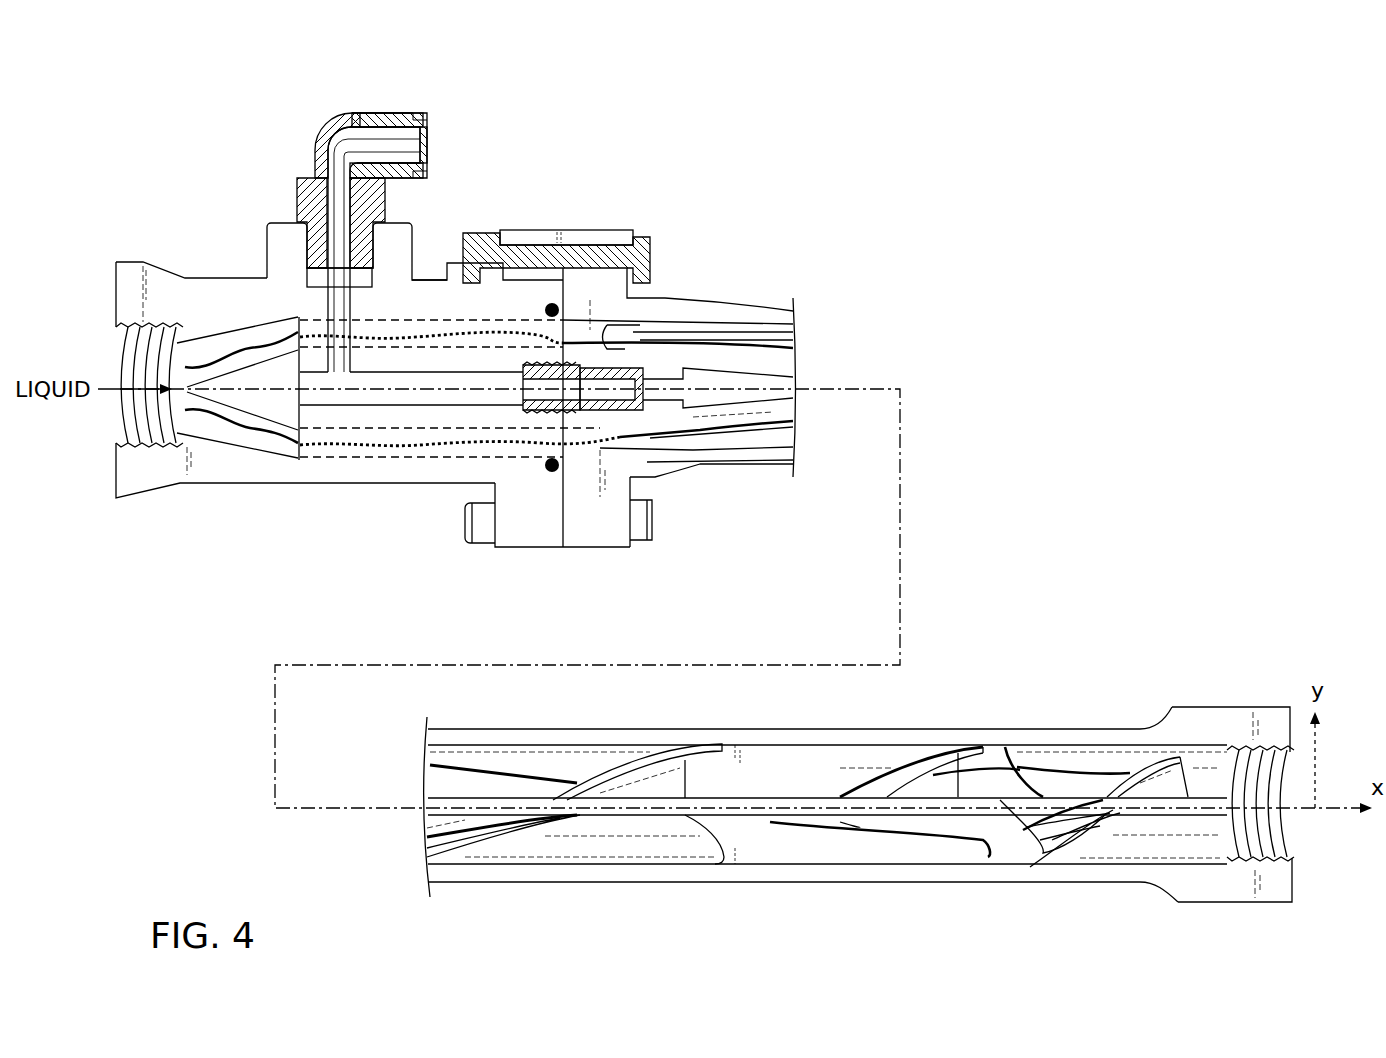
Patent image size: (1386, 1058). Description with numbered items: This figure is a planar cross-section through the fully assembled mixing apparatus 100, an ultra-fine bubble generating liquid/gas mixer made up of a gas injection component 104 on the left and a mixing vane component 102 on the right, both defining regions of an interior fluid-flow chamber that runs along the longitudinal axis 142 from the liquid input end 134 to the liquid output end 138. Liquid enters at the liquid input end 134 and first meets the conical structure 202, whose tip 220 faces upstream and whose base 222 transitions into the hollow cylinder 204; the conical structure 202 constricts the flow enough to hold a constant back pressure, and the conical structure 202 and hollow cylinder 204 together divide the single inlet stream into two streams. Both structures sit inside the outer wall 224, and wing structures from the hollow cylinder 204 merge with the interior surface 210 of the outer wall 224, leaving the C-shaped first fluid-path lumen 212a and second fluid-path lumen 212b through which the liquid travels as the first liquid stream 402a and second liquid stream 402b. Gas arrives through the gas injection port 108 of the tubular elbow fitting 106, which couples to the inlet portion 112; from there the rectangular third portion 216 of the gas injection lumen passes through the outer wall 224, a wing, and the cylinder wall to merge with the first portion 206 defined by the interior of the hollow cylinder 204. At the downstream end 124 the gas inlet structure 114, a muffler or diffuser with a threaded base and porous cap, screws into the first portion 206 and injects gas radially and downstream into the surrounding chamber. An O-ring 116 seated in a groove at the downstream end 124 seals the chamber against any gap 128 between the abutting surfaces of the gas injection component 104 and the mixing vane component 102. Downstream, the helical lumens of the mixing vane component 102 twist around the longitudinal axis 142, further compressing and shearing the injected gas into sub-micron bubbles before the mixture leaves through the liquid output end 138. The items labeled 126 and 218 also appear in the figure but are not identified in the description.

The mixing apparatus 100 is at (993, 258).
The mixing vane component 102 is at (735, 714).
The gas injection component 104 is at (170, 220).
The tubular elbow fitting 106 is at (362, 112).
The gas injection port 108 is at (422, 143).
The inlet portion 112 is at (412, 245).
The gas inlet structure 114 is at (642, 367).
The O-ring 116 is at (574, 338).
The downstream end 124 is at (530, 547).
The nut 126 is at (574, 350).
The gap 128 is at (572, 547).
The liquid input end 134 is at (132, 305).
The liquid output end 138 is at (1245, 703).
The longitudinal axis 142 is at (740, 808).
The conical structure 202 is at (220, 393).
The hollow cylinder 204 is at (363, 430).
The first portion of gas injection lumen 206 is at (420, 400).
The interior surface 210 is at (377, 323).
The first fluid-path lumen 212a is at (522, 330).
The second fluid-path lumen 212b is at (483, 447).
The third portion of gas injection lumen 216 is at (230, 350).
The gas tube 218 is at (317, 177).
The tip 220 is at (175, 395).
The base 222 is at (307, 417).
The outer wall 224 is at (512, 303).
The first liquid stream 402a is at (337, 328).
The second liquid stream 402b is at (748, 428).